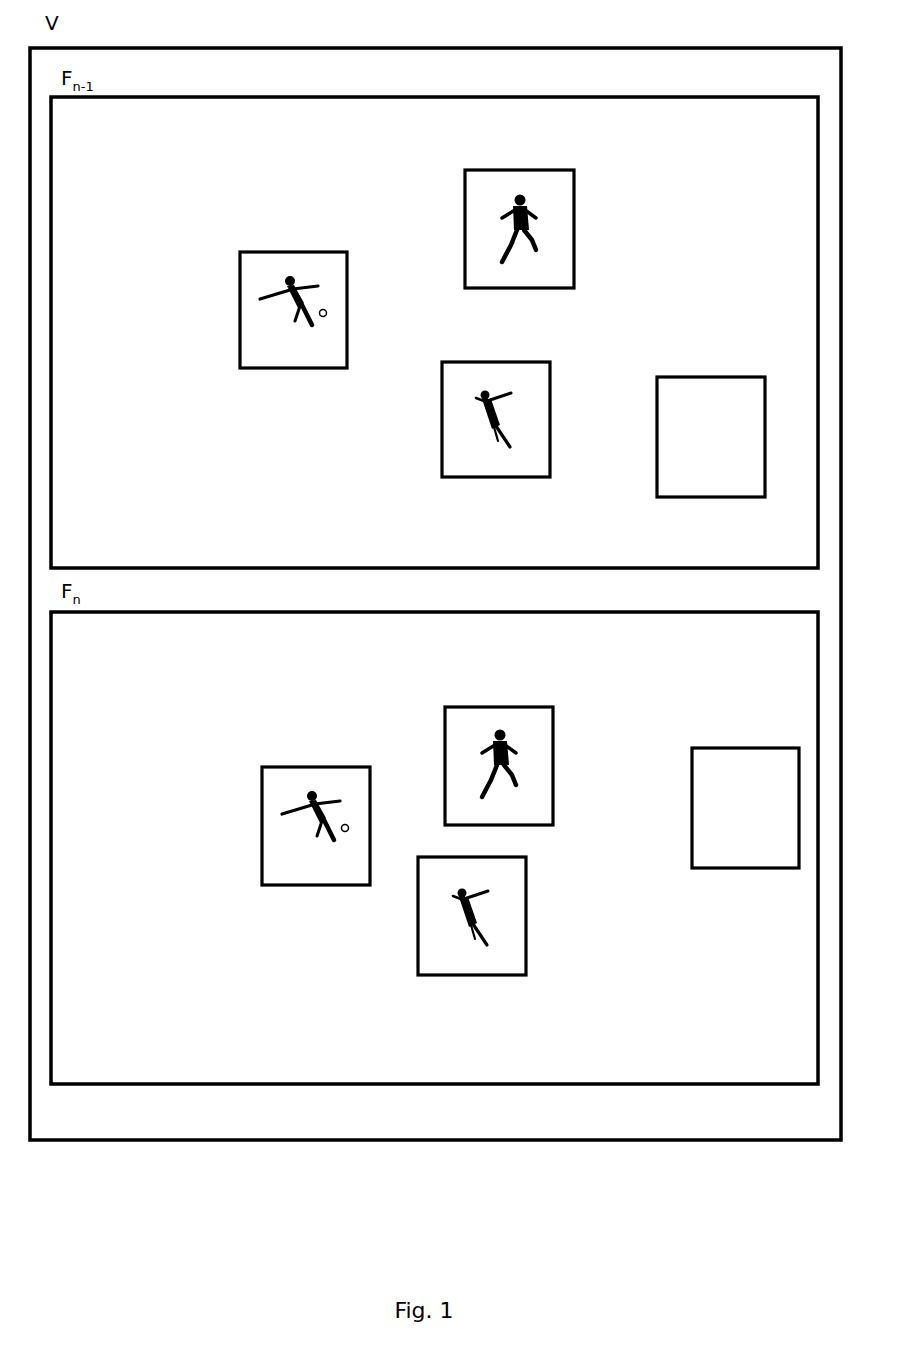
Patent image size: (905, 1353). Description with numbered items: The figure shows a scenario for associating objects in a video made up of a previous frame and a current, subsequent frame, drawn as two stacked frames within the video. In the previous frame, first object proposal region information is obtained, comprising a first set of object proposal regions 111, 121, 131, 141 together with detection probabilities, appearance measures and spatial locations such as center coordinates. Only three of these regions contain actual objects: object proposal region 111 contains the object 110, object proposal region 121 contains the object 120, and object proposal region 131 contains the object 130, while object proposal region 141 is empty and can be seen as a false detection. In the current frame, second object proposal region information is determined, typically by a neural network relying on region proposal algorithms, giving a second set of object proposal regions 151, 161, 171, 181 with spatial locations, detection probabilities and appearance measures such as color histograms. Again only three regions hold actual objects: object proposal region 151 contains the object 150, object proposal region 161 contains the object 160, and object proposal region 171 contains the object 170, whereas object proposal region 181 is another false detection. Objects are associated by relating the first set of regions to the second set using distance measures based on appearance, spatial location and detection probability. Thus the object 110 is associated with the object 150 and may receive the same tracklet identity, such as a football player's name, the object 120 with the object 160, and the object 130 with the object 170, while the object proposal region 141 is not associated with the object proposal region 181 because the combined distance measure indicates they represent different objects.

The object 110 is at (284, 308).
The object proposal region 111 is at (335, 372).
The object 120 is at (472, 403).
The object proposal region 121 is at (497, 478).
The object 130 is at (537, 212).
The object proposal region 131 is at (576, 262).
The object proposal region 141 is at (710, 375).
The object 150 is at (307, 829).
The object proposal region 151 is at (355, 889).
The object 160 is at (450, 902).
The object proposal region 161 is at (472, 977).
The object 170 is at (517, 748).
The object proposal region 171 is at (554, 798).
The object proposal region 181 is at (747, 747).